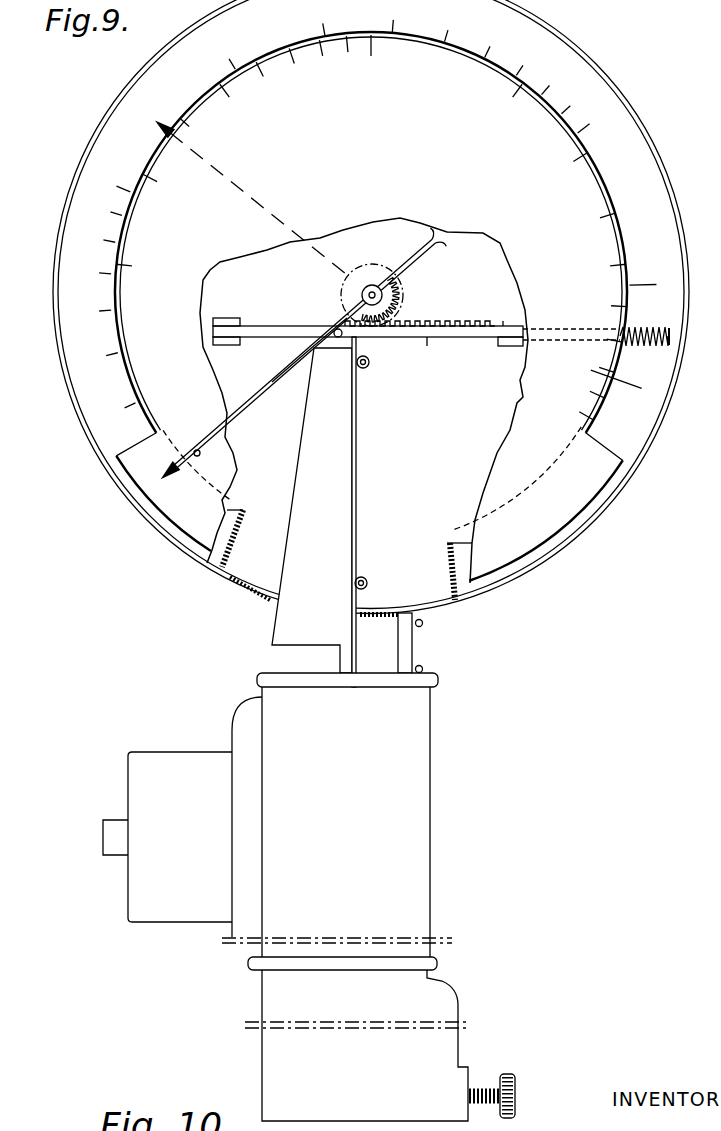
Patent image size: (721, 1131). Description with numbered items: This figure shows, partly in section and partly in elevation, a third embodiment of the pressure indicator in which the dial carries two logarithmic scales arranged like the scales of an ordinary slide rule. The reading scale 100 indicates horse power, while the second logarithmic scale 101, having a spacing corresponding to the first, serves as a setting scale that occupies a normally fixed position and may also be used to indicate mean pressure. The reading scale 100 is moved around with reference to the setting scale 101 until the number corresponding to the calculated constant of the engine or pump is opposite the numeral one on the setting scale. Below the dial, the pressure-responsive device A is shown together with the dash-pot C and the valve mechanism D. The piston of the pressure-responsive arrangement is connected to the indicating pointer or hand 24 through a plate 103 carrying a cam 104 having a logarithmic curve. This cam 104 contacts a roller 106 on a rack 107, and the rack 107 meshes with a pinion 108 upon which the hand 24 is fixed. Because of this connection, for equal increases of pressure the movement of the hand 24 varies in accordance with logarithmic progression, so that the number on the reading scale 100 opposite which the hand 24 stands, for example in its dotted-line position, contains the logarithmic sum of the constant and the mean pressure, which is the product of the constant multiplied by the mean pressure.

The logarithmic scale 100 is at (578, 65).
The second logarithmic scale 101 is at (456, 81).
The plate 103 is at (338, 537).
The cam 104 is at (294, 468).
The roller 106 is at (310, 366).
The rack 107 is at (262, 328).
The pinion 108 is at (398, 293).
The indicating pointer or hand 24 is at (264, 398).
The pressure-responsive device A is at (438, 822).
The dash-pot C is at (380, 1039).
The valve mechanism D is at (158, 837).